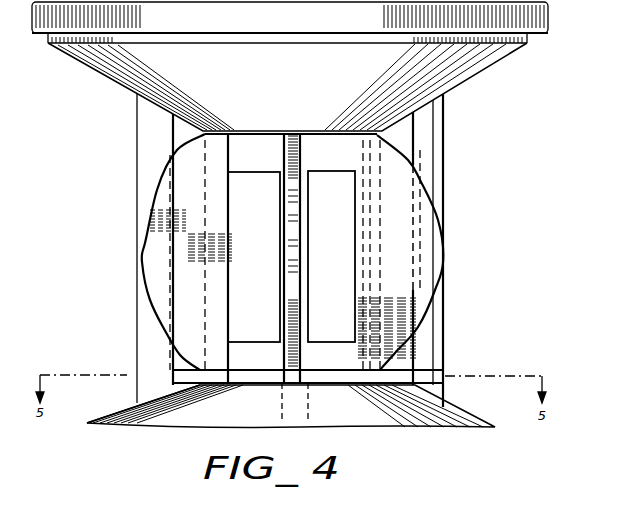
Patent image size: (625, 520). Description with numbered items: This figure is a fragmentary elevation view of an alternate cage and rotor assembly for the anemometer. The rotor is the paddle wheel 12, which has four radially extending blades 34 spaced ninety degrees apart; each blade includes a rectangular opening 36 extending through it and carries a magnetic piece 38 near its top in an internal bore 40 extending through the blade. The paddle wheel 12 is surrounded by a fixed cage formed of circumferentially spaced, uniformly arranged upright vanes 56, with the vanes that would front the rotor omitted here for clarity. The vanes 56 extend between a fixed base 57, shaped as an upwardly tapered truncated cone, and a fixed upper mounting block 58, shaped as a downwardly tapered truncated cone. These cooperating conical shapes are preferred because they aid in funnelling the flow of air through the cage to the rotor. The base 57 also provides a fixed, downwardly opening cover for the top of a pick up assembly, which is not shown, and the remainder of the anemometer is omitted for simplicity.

The paddle wheel 12 is at (443, 264).
The blades 34 is at (408, 165).
The rectangular opening 36 is at (230, 234).
The magnetic piece 38 is at (415, 352).
The internal bore 40 is at (400, 217).
The upright vanes 56 is at (228, 205).
The fixed base 57 is at (378, 418).
The upper mounting block 58 is at (115, 68).